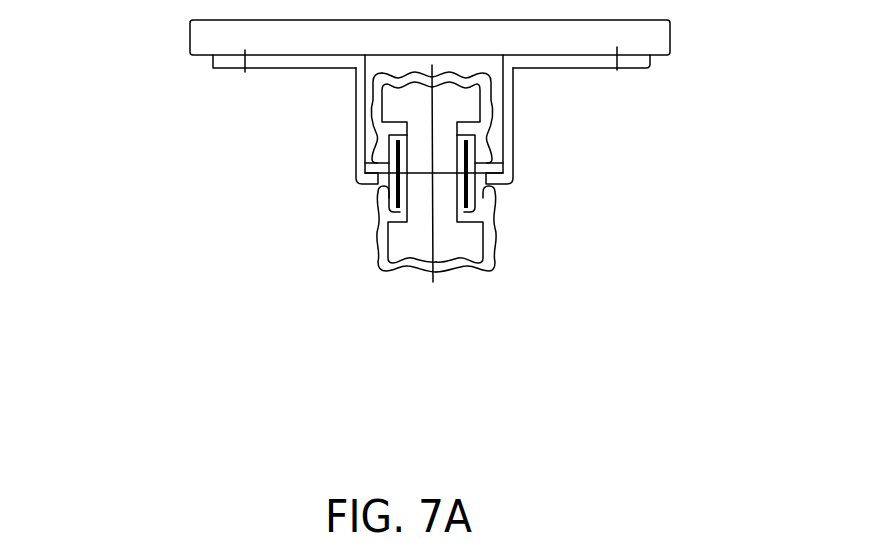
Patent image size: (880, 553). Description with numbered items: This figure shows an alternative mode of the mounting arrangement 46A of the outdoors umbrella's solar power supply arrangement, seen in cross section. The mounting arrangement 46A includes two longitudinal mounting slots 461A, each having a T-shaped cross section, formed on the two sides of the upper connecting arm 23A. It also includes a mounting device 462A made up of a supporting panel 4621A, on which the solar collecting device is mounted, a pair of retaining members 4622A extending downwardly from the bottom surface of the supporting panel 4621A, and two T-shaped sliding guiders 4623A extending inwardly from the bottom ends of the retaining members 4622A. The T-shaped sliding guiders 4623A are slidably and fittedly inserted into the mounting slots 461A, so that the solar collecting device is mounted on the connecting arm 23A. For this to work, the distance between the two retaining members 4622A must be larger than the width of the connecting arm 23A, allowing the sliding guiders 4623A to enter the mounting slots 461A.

The mounting arrangement 46A is at (427, 203).
The mounting device 462A is at (504, 101).
The supporting panel 4621A is at (650, 58).
The retaining members 4622A is at (512, 90).
The T-shaped sliding guiders 4623A is at (481, 222).
The longitudinal mounting slots 461A is at (495, 226).
The upper connecting arm 23A is at (452, 116).